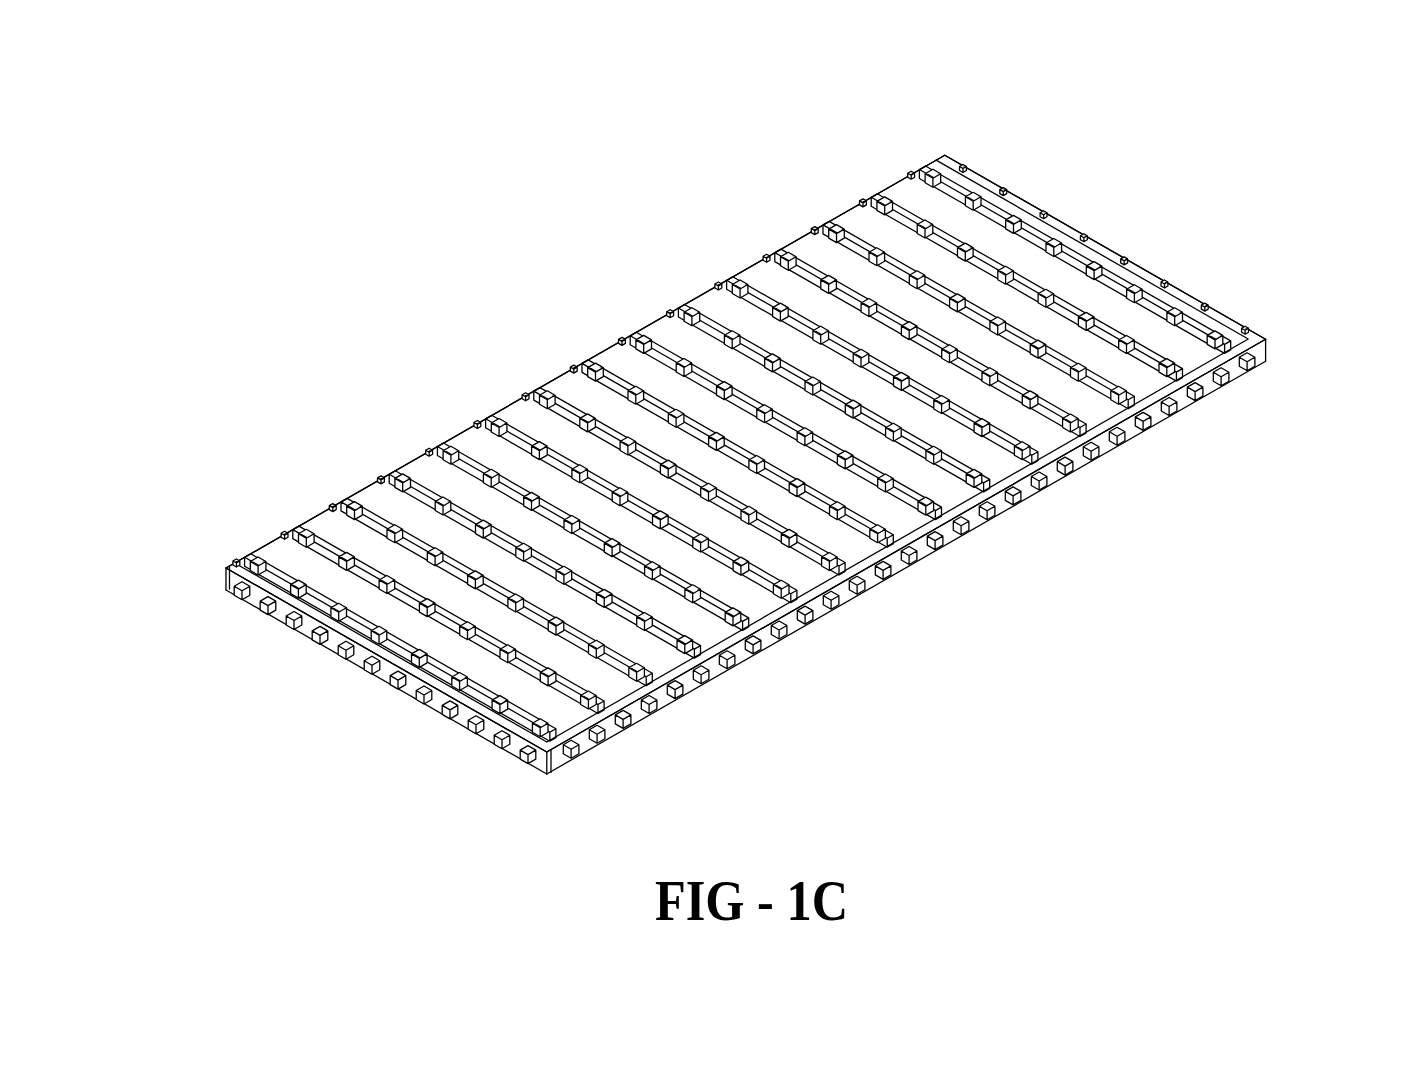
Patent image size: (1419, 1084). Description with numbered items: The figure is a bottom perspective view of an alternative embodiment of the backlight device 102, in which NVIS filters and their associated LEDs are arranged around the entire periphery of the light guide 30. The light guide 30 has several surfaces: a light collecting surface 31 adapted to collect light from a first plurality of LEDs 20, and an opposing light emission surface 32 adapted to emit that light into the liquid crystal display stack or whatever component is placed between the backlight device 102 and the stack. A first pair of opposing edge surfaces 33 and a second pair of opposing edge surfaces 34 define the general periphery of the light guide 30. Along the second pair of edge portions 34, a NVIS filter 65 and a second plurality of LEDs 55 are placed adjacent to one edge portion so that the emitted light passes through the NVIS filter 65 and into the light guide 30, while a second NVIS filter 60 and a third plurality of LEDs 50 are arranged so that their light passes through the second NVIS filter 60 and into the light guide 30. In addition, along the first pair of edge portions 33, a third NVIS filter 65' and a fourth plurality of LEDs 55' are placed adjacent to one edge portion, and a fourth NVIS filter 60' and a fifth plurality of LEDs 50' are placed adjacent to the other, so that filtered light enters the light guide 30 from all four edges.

The backlight device 102 is at (405, 315).
The first plurality of LEDs 20 is at (1015, 226).
The light guide 30 is at (1163, 294).
The light collecting surface 31 is at (713, 305).
The light emission surface 32 is at (792, 675).
The first pair of opposing edge surfaces 33 is at (1130, 256).
The second pair of opposing edge surfaces 34 is at (590, 353).
The third plurality of LEDs 50 is at (574, 346).
The fifth plurality of LEDs 50' is at (1104, 235).
The second plurality of LEDs 55 is at (909, 555).
The fourth plurality of LEDs 55' is at (385, 676).
The second NVIS filter 60 is at (170, 526).
The fourth NVIS filter 60' is at (1333, 306).
The NVIS filter 65 is at (612, 805).
The third NVIS filter 65' is at (386, 715).